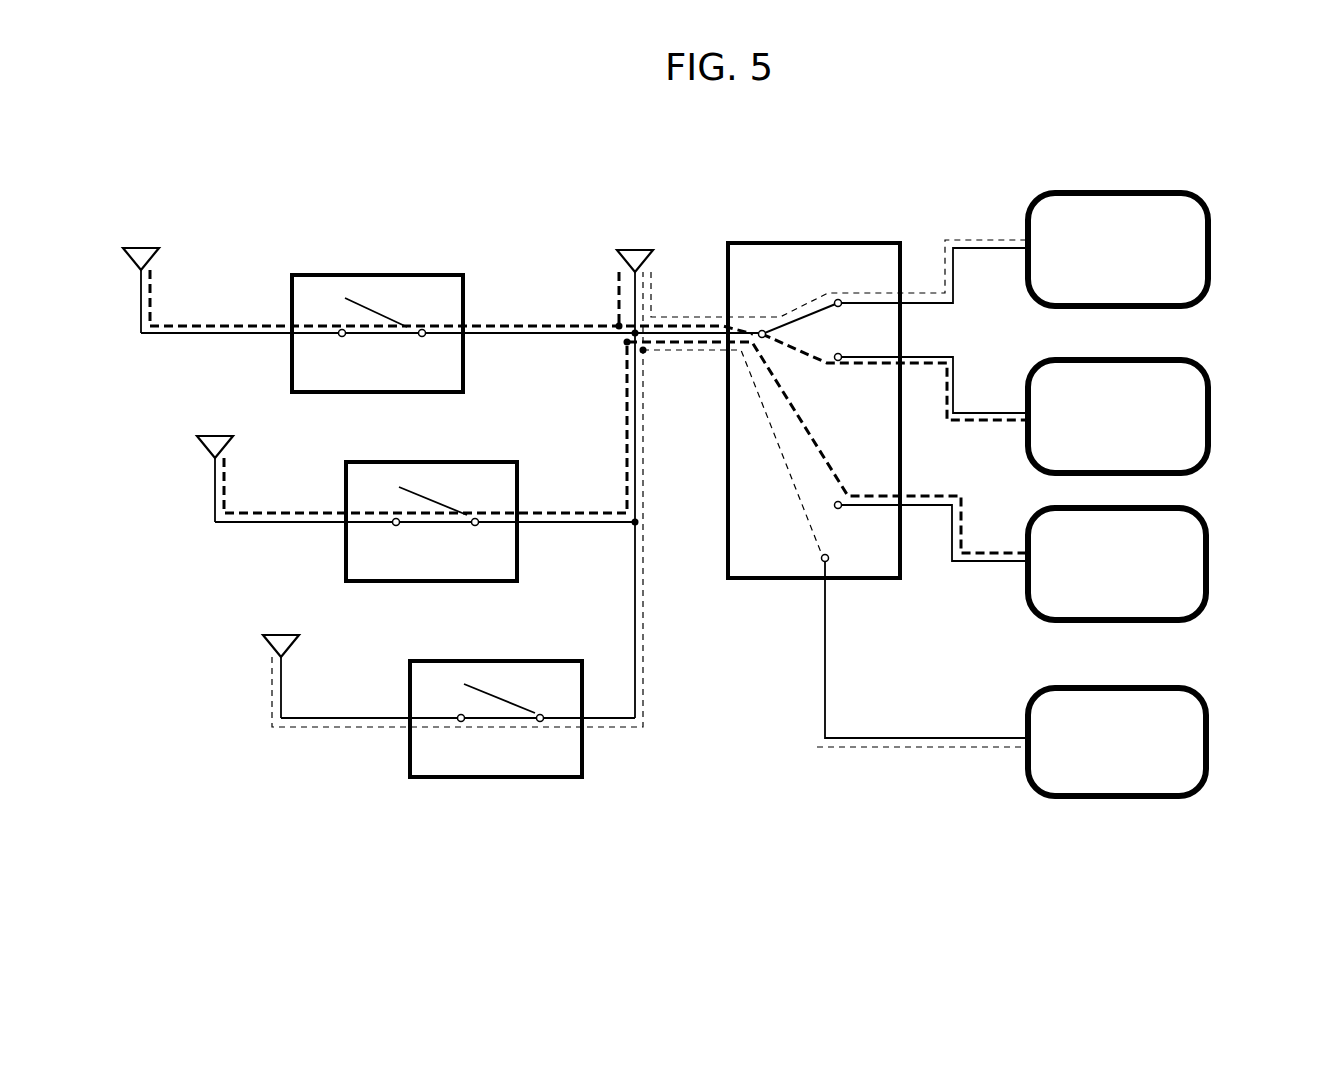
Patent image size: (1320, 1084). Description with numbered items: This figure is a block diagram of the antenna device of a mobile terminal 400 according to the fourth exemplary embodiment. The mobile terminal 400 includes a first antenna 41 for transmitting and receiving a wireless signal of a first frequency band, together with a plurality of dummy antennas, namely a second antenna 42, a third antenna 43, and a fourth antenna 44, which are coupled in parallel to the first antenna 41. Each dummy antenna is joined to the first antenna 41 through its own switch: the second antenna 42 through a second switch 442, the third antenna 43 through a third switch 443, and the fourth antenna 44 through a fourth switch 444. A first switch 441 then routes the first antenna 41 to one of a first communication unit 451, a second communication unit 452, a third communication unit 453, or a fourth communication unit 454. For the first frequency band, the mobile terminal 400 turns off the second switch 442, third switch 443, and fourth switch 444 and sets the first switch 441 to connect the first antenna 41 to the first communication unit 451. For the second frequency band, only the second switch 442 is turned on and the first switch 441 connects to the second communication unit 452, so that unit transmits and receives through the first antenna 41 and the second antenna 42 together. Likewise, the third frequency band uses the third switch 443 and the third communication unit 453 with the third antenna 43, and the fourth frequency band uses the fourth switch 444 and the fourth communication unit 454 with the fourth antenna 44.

The mobile terminal 400 is at (1203, 148).
The first antenna 41 is at (634, 250).
The second antenna 42 is at (142, 248).
The third antenna 43 is at (214, 436).
The fourth antenna 44 is at (280, 635).
The first switch 441 is at (813, 243).
The second switch 442 is at (376, 275).
The third switch 443 is at (430, 462).
The fourth switch 444 is at (495, 661).
The first communication unit 451 is at (1213, 246).
The second communication unit 452 is at (1213, 412).
The third communication unit 453 is at (1211, 559).
The fourth communication unit 454 is at (1211, 737).